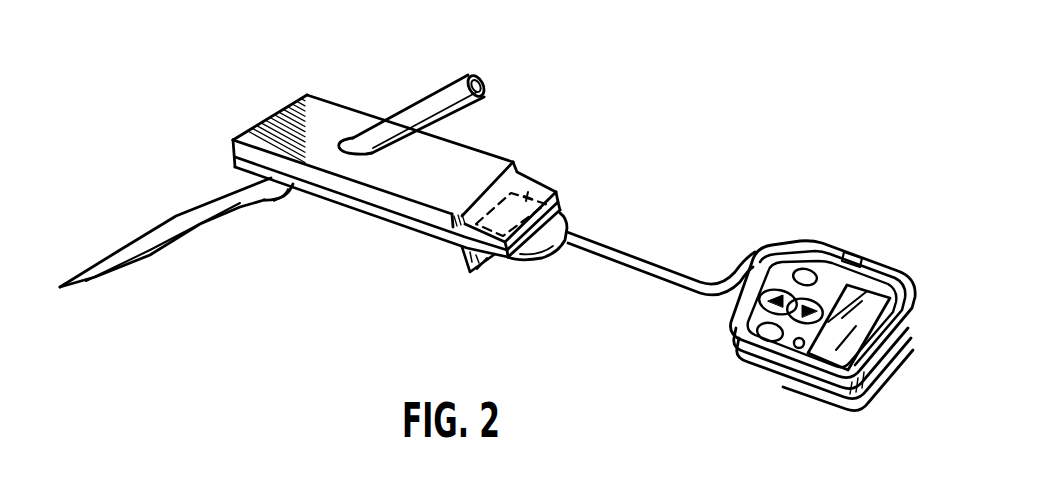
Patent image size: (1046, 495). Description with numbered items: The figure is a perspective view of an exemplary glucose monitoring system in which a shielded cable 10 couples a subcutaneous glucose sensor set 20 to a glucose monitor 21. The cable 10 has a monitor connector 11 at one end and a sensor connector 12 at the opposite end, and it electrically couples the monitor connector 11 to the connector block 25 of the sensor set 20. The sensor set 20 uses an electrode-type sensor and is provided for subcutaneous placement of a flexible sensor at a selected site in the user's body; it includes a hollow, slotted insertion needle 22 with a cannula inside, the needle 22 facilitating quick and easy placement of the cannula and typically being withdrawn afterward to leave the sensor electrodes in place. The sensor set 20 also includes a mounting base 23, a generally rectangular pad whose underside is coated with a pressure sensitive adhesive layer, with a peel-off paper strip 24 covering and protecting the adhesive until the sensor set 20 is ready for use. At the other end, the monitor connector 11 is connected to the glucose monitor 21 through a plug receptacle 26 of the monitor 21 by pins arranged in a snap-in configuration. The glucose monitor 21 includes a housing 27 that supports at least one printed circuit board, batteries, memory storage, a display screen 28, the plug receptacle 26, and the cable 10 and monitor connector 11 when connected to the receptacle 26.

The shielded cable 10 is at (650, 263).
The monitor connector 11 is at (861, 251).
The sensor connector 12 is at (563, 223).
The subcutaneous glucose sensor set 20 is at (154, 167).
The glucose monitor 21 is at (813, 222).
The insertion needle 22 is at (168, 226).
The mounting base 23 is at (536, 138).
The peel-off paper strip 24 is at (473, 260).
The connector block 25 is at (545, 186).
The plug receptacle 26 is at (899, 258).
The housing 27 is at (853, 378).
The display screen 28 is at (863, 332).